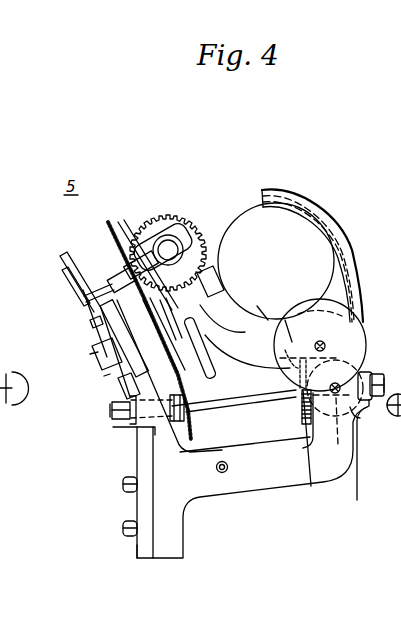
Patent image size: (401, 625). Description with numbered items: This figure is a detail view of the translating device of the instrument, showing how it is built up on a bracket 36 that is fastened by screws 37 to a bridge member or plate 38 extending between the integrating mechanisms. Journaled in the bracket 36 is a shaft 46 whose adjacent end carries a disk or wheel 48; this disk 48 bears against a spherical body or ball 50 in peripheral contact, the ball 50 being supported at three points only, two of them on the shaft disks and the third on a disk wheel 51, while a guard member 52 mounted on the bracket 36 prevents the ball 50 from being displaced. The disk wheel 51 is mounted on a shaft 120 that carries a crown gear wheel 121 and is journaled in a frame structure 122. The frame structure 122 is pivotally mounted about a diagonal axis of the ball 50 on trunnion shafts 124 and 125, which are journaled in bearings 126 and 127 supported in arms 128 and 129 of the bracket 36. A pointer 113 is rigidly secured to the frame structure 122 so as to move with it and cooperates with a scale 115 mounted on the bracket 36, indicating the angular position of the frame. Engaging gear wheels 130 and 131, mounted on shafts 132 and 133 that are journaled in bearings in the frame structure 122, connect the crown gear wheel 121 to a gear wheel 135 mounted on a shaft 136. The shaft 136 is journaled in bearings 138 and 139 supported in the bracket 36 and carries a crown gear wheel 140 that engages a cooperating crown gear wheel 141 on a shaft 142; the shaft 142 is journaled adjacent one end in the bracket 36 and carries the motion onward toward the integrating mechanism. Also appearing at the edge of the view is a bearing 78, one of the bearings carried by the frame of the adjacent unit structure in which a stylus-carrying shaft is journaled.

The bracket 36 is at (248, 487).
The screws 37 is at (124, 521).
The bridge member or plate 38 is at (140, 545).
The shaft 46 is at (323, 344).
The disk or wheel 48 is at (285, 366).
The spherical body or ball 50 is at (242, 216).
The disk wheel 51 is at (152, 220).
The guard member 52 is at (330, 217).
The bearing 78 is at (396, 421).
The pointer 113 is at (66, 281).
The scale 115 is at (60, 258).
The shaft 120 is at (167, 235).
The crown gear wheel 121 is at (168, 228).
The frame structure 122 is at (112, 270).
The trunnion shaft 124 is at (110, 369).
The trunnion shaft 125 is at (216, 293).
The bearing 126 is at (133, 334).
The bearing 127 is at (228, 309).
The arm 128 is at (120, 386).
The arm 129 is at (224, 368).
The gear wheel 130 is at (182, 361).
The gear wheel 131 is at (120, 224).
The shaft 132 is at (172, 342).
The shaft 133 is at (126, 262).
The gear wheel 135 is at (196, 438).
The shaft 136 is at (266, 401).
The bearing 138 is at (116, 427).
The bearing 139 is at (375, 373).
The crown gear wheel 140 is at (314, 449).
The crown gear wheel 141 is at (360, 454).
The shaft 142 is at (332, 432).